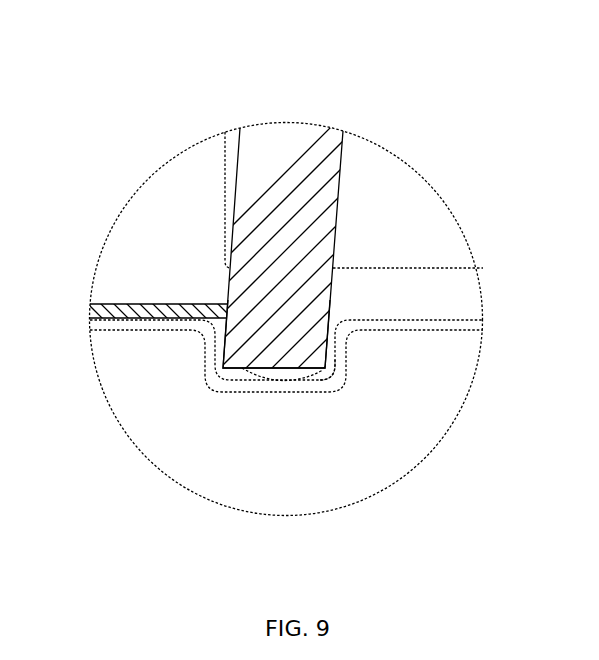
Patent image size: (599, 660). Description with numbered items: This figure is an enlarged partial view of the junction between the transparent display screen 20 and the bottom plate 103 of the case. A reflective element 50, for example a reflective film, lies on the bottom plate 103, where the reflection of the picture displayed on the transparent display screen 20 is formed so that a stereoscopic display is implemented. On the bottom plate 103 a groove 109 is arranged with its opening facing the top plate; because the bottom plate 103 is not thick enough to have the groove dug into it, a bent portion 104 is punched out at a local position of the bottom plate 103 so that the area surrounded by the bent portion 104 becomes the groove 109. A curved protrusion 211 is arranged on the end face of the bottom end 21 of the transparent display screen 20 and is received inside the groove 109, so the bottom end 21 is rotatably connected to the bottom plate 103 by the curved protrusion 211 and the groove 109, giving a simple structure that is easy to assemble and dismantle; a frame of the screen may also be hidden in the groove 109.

The transparent display screen 20 is at (290, 173).
The bottom end of the transparent display screen 21 is at (268, 325).
The reflective element 50 is at (135, 303).
The bottom plate 103 is at (145, 328).
The bent portion 104 is at (305, 388).
The groove 109 is at (345, 374).
The curved protrusion 211 is at (265, 380).